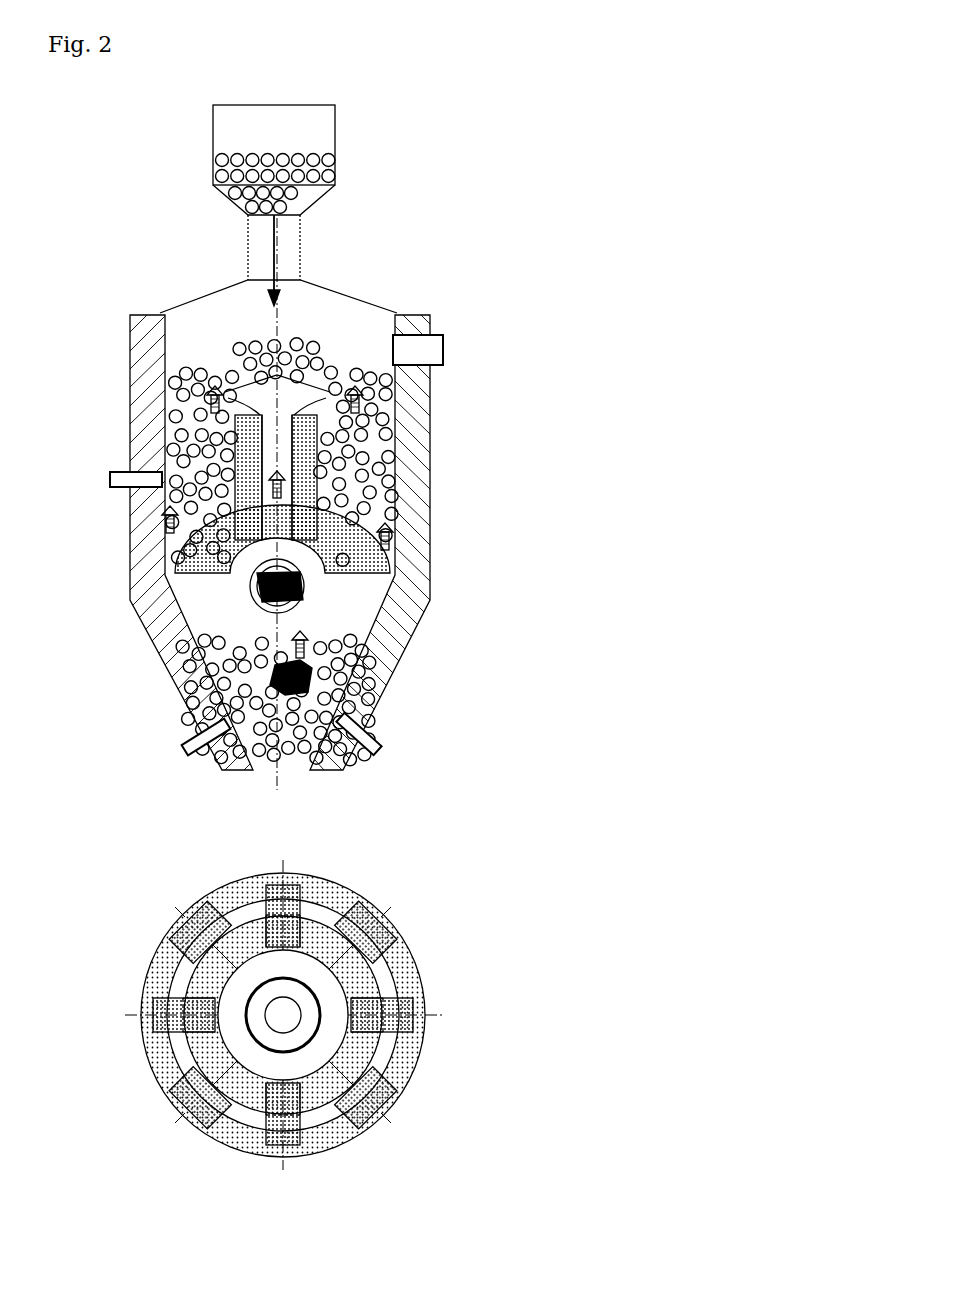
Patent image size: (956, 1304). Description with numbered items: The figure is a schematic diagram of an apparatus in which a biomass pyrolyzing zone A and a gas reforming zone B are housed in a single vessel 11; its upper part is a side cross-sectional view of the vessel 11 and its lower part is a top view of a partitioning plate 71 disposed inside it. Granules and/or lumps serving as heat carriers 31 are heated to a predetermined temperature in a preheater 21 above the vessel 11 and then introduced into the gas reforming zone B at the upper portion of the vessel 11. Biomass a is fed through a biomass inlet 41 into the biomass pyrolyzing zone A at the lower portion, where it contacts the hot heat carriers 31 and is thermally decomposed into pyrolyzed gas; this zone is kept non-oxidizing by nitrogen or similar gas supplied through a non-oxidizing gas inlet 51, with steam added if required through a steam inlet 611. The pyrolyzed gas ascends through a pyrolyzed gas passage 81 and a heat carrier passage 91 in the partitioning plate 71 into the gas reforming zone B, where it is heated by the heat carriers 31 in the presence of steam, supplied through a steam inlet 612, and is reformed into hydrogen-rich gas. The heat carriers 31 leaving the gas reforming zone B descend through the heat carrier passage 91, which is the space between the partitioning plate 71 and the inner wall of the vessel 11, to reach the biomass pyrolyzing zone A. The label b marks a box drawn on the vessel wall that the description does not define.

The vessel 11 is at (352, 296).
The preheater 21 is at (290, 105).
The heat carriers 31 is at (320, 166).
The biomass inlet 41 is at (178, 648).
The non-oxidizing gas inlet 51 is at (386, 745).
The steam inlet 611 is at (204, 758).
The steam inlet 612 is at (106, 480).
The partitioning plate 71 is at (314, 521).
The pyrolyzed gas passage 81 is at (278, 449).
The heat carrier passage 91 is at (163, 569).
The biomass a is at (290, 665).
The sensor box b is at (442, 334).
The biomass pyrolyzing zone A is at (327, 627).
The gas reforming zone B is at (380, 447).